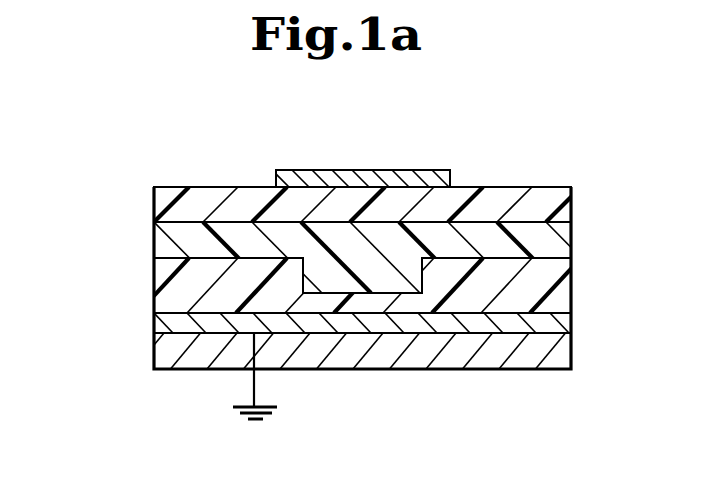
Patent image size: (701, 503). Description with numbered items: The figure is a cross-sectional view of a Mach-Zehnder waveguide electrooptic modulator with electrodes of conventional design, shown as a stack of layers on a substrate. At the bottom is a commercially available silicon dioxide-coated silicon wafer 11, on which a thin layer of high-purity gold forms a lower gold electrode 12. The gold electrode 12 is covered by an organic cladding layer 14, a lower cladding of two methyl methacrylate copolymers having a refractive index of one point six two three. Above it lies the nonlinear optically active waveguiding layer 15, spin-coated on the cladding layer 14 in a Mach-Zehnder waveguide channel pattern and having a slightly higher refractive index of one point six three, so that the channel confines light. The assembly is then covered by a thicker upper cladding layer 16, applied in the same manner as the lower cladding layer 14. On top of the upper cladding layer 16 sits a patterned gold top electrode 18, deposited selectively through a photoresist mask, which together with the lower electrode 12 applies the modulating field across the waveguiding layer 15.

The silicon dioxide-coated silicon wafer 11 is at (153, 354).
The gold electrode layer 12 is at (153, 320).
The organic cladding layer 14 is at (153, 285).
The nonlinear optically active waveguiding layer 15 is at (153, 237).
The upper cladding layer 16 is at (153, 200).
The top electrode 18 is at (275, 170).